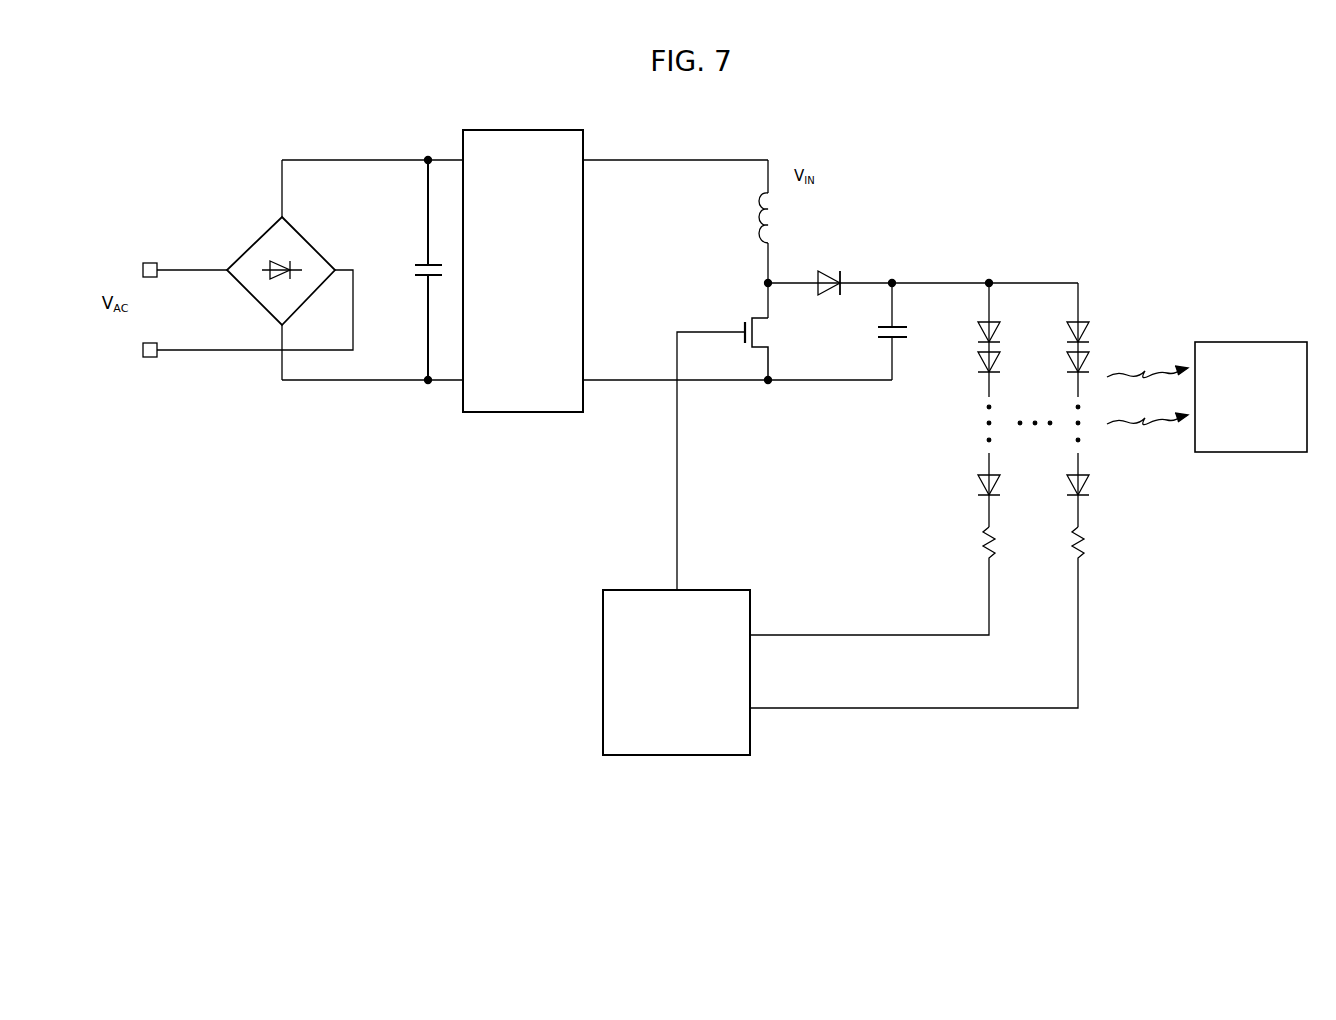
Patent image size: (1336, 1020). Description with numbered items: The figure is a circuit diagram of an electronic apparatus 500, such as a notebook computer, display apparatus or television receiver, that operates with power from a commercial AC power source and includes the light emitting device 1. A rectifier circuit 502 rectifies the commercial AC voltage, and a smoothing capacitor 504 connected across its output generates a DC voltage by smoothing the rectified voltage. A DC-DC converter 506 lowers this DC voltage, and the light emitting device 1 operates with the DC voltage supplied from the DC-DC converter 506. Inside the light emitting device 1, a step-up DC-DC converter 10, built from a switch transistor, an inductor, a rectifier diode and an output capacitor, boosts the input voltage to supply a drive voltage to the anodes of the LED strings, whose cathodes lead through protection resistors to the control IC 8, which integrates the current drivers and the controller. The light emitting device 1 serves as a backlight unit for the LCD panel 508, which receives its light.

The rectifier circuit 502 is at (245, 248).
The smoothing capacitor 504 is at (411, 268).
The DC-DC converter 506 is at (522, 129).
The LCD panel 508 is at (1254, 341).
The control IC 8 is at (603, 630).
The DC-DC converter 10 is at (920, 398).
The light emitting device 1 is at (1115, 772).
The electronic apparatus 500 is at (723, 881).